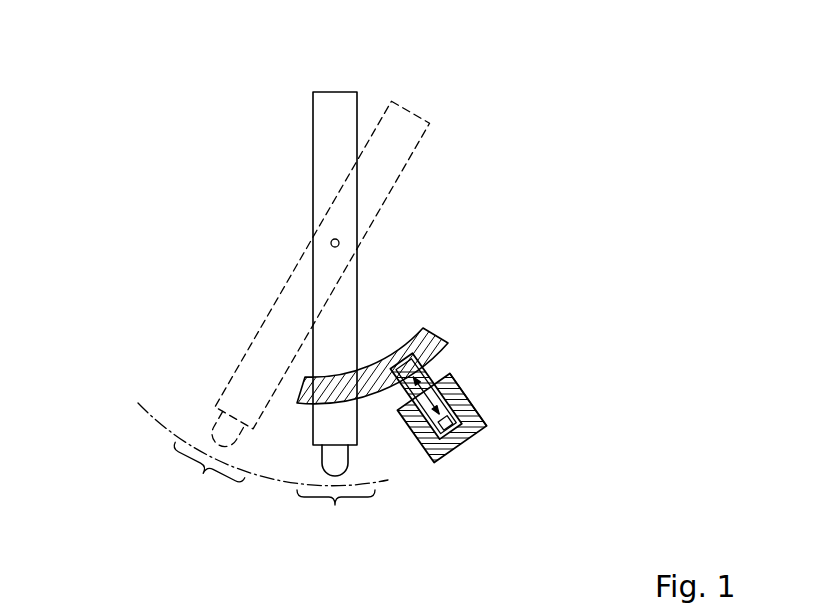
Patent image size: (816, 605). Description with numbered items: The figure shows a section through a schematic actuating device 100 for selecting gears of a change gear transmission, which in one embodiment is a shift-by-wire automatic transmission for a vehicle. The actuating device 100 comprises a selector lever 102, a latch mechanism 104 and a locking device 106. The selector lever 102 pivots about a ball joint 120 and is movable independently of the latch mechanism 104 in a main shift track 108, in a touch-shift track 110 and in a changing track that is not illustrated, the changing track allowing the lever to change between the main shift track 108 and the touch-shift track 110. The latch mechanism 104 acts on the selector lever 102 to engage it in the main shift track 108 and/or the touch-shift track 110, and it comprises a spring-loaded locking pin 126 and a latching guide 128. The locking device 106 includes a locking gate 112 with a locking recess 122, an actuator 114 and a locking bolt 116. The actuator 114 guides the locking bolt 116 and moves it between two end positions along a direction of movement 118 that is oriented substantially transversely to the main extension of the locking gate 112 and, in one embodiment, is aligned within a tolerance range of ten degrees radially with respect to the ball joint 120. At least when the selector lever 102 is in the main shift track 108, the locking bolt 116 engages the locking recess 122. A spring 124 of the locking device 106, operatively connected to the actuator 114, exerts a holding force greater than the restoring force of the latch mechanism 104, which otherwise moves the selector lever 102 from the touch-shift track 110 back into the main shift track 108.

The actuating device 100 is at (453, 125).
The selector lever 102 is at (337, 150).
The latch mechanism 104 is at (177, 401).
The locking device 106 is at (502, 371).
The main shift track 108 is at (335, 505).
The touch-shift track 110 is at (208, 470).
The locking gate 112 is at (428, 345).
The actuator 114 is at (475, 428).
The locking bolt 116 is at (428, 373).
The direction of movement 118 is at (470, 385).
The ball joint 120 is at (339, 241).
The locking recess 122 is at (410, 347).
The spring 124 is at (465, 433).
The spring-loaded locking pin 126 is at (338, 457).
The latching guide 128 is at (160, 422).